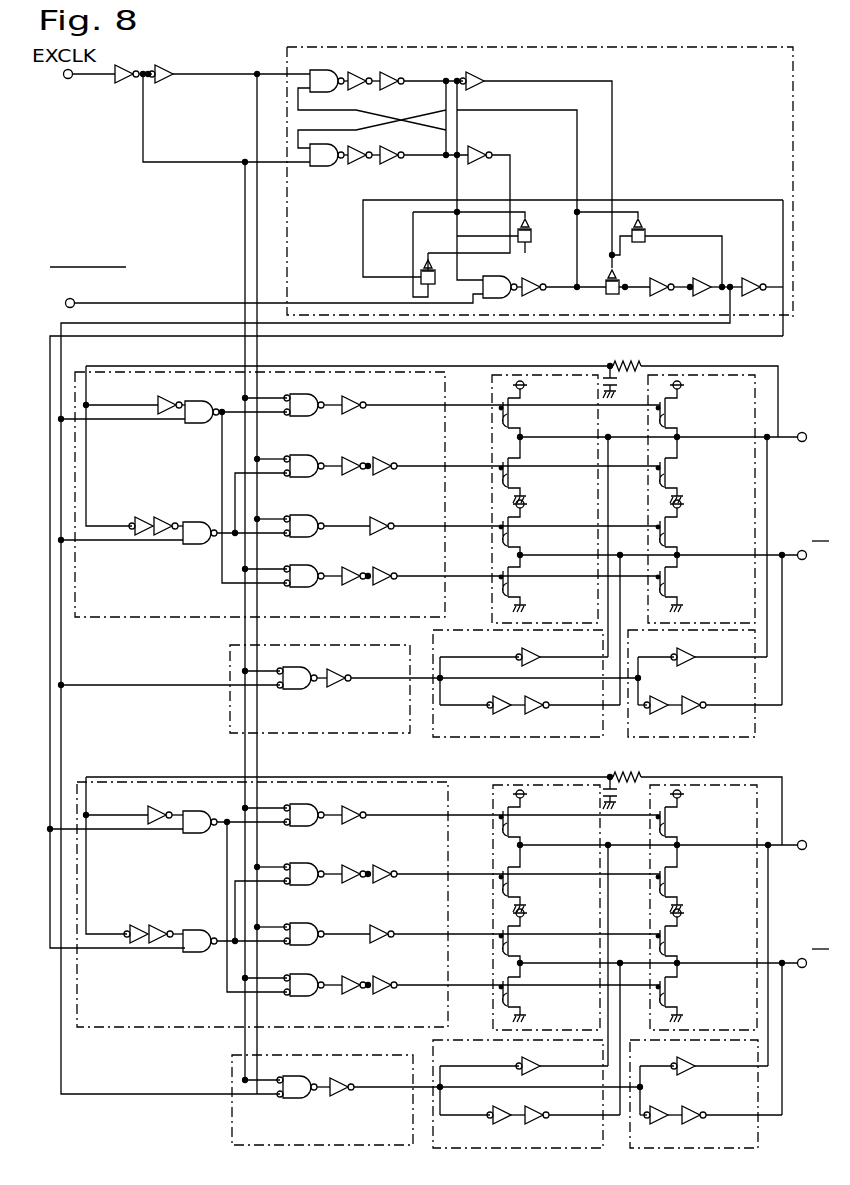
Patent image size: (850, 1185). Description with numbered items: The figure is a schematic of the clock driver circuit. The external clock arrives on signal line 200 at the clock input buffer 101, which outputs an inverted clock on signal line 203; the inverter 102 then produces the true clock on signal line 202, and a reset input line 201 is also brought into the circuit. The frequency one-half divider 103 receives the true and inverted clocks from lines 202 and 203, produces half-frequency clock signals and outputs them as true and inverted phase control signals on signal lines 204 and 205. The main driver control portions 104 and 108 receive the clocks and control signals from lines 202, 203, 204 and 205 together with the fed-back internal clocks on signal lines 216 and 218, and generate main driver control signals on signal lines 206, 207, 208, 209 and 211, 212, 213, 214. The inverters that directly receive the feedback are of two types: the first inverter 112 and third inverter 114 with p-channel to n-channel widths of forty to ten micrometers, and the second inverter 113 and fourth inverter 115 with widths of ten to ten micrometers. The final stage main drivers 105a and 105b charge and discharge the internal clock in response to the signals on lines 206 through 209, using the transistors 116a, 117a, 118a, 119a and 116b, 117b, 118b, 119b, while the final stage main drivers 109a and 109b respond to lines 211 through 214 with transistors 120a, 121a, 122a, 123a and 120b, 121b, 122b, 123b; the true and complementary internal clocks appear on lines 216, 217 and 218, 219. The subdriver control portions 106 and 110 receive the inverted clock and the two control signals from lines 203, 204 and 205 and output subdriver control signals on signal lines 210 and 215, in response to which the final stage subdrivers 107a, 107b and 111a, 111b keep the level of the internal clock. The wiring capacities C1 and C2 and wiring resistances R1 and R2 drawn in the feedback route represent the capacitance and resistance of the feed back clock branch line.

The clock input buffer 101 is at (139, 80).
The inverter 102 is at (160, 80).
The frequency ½ divider 103 is at (626, 48).
The main driver control portion 104 is at (127, 617).
The final stage main driver 105a is at (600, 512).
The final stage main driver 105b is at (757, 500).
The subdriver control portion 106 is at (230, 665).
The final stage subdriver 107a is at (603, 727).
The final stage subdriver 107b is at (627, 727).
The main driver control portion 108 is at (127, 1027).
The final stage main driver 109a is at (510, 785).
The final stage main driver 109b is at (757, 902).
The subdriver control portion 110 is at (232, 1065).
The final stage subdriver 111a is at (547, 1148).
The final stage subdriver 111b is at (758, 1140).
The inverter INV1 112 is at (145, 413).
The inverter INV2 113 is at (129, 533).
The inverter INV3 114 is at (159, 838).
The inverter INV4 115 is at (128, 950).
The p-channel pull-up transistor 116a is at (522, 421).
The n-channel pull-down transistor 117a is at (524, 481).
The p-channel pull-up transistor 118a is at (522, 540).
The n-channel pull-down transistor 119a is at (524, 592).
The p-channel pull-up transistor 116b is at (679, 421).
The n-channel pull-down transistor 117b is at (681, 481).
The p-channel pull-up transistor 118b is at (679, 540).
The n-channel pull-down transistor 119b is at (681, 592).
The p-channel pull-up transistor 120a is at (522, 830).
The n-channel pull-down transistor 121a is at (524, 890).
The p-channel pull-up transistor 122a is at (522, 949).
The n-channel pull-down transistor 123a is at (524, 1001).
The p-channel pull-up transistor 120b is at (679, 830).
The n-channel pull-down transistor 121b is at (681, 891).
The p-channel pull-up transistor 122b is at (679, 949).
The n-channel pull-down transistor 123b is at (681, 1001).
The signal line 200 is at (78, 79).
The reset input terminal 201 is at (143, 300).
The signal line 202 is at (245, 198).
The signal line 203 is at (257, 234).
The signal line 204 is at (440, 336).
The signal line 205 is at (298, 332).
The main driver control signal line 206 is at (472, 408).
The main driver control signal line 207 is at (475, 470).
The main driver control signal line 208 is at (472, 529).
The main driver control signal line 209 is at (472, 579).
The subdriver control signal line 210 is at (418, 668).
The main driver control signal line 211 is at (472, 818).
The main driver control signal line 212 is at (472, 877).
The main driver control signal line 213 is at (472, 937).
The main driver control signal line 214 is at (472, 988).
The subdriver control signal line 215 is at (420, 1076).
The signal line 216 is at (782, 433).
The inverted phase-1 clock output terminal 217 is at (782, 560).
The signal line 218 is at (792, 850).
The inverted phase-2 clock output terminal 219 is at (790, 970).
The wiring resistance R1 is at (625, 358).
The wiring capacity C1 is at (621, 385).
The wiring resistance R2 is at (627, 767).
The wiring capacity C2 is at (622, 796).